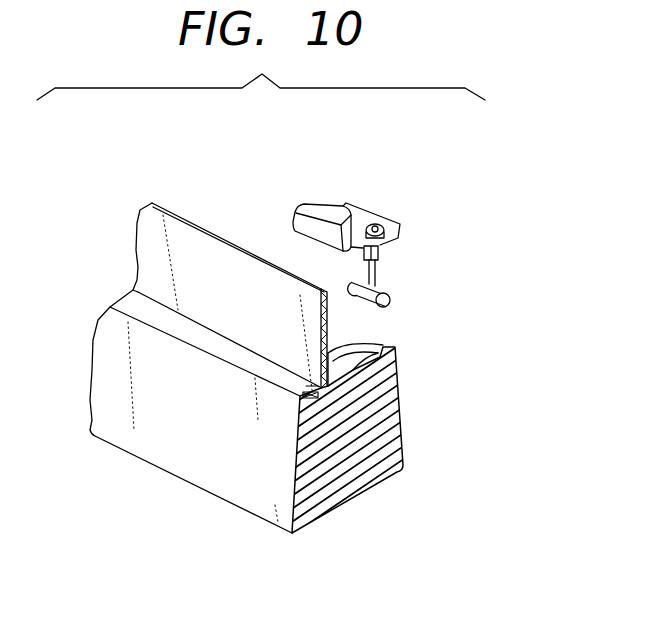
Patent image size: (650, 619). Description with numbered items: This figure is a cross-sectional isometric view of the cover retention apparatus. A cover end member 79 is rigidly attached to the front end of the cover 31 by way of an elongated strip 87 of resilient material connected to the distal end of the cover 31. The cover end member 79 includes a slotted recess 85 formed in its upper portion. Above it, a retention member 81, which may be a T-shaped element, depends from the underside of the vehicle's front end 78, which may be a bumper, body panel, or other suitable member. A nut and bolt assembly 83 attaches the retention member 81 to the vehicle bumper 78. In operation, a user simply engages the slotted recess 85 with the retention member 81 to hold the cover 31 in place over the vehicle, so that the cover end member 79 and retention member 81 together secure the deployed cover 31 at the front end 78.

The cover 31 is at (320, 295).
The vehicle front end 78 is at (358, 215).
The cover end member 79 is at (400, 442).
The retention member 81 is at (392, 308).
The nut and bolt assembly 83 is at (377, 223).
The slotted recess 85 is at (385, 340).
The elongated strip 87 is at (298, 418).